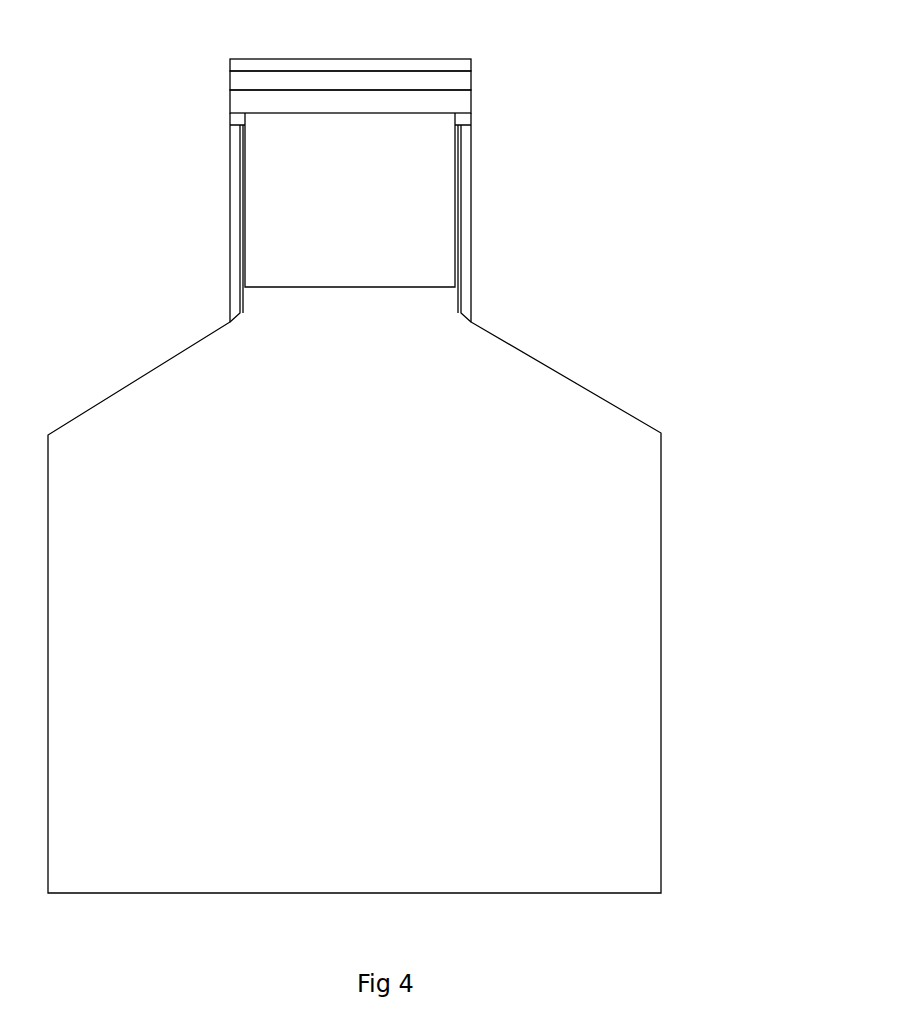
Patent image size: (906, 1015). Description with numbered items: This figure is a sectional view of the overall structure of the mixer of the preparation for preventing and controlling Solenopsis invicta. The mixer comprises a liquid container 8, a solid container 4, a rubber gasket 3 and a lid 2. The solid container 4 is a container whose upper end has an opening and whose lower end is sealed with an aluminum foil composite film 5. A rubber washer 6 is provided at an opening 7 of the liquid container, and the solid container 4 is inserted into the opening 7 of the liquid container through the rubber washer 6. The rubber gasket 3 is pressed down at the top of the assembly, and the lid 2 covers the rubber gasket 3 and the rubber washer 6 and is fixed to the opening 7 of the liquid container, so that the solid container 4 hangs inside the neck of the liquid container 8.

The lid 2 is at (463, 65).
The rubber gasket 3 is at (458, 78).
The solid container 4 is at (250, 100).
The aluminum foil composite film 5 is at (262, 283).
The rubber washer 6 is at (465, 118).
The opening of the liquid container 7 is at (465, 225).
The liquid container 8 is at (615, 658).